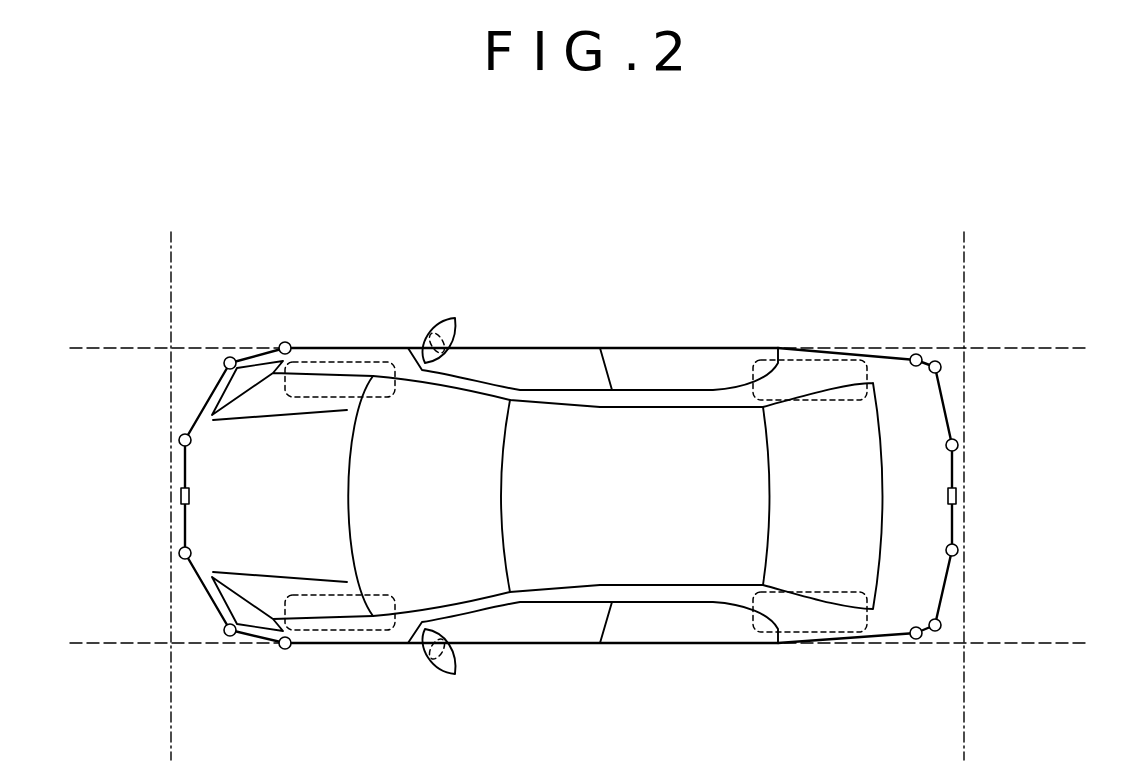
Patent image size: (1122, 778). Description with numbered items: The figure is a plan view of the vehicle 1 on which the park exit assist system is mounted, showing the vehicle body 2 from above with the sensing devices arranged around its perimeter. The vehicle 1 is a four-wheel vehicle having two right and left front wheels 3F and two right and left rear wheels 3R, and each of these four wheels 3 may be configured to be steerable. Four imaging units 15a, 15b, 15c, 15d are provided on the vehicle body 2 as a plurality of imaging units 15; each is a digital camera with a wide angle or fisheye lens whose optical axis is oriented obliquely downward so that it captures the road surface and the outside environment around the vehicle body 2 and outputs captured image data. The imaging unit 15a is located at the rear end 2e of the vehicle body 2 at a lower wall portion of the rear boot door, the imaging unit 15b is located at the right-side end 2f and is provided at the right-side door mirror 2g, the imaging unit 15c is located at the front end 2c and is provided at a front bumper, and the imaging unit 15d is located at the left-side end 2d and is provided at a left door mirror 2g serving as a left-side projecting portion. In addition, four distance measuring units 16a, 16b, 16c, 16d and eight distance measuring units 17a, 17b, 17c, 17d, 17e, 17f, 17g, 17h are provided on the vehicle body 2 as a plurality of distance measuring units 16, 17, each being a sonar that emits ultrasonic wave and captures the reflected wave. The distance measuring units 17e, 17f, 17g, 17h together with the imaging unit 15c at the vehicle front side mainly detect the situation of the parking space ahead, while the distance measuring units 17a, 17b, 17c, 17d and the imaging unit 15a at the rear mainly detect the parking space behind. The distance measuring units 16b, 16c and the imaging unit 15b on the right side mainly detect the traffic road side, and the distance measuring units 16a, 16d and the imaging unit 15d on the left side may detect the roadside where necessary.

The vehicle 1 is at (700, 253).
The vehicle body 2 is at (888, 348).
The front end 2c is at (181, 512).
The left-side end 2d is at (687, 644).
The rear end 2e is at (957, 518).
The right-side end 2f is at (698, 347).
The door mirror 2g is at (458, 320).
The wheels 3 is at (576, 498).
The front wheels 3F is at (338, 362).
The rear wheels 3R is at (806, 360).
The imaging units 15 is at (586, 517).
The imaging unit 15a is at (957, 495).
The imaging unit 15b is at (437, 333).
The imaging unit 15c is at (180, 495).
The imaging unit 15d is at (436, 660).
The distance measuring units 16 is at (581, 482).
The distance measuring unit 16a is at (915, 640).
The distance measuring unit 16b is at (917, 355).
The distance measuring unit 16c is at (284, 343).
The distance measuring unit 16d is at (285, 650).
The distance measuring units 17 is at (578, 467).
The distance measuring unit 17a is at (942, 625).
The distance measuring unit 17b is at (958, 550).
The distance measuring unit 17c is at (957, 443).
The distance measuring unit 17d is at (940, 364).
The distance measuring unit 17e is at (225, 363).
The distance measuring unit 17f is at (180, 439).
The distance measuring unit 17g is at (180, 551).
The distance measuring unit 17h is at (225, 630).